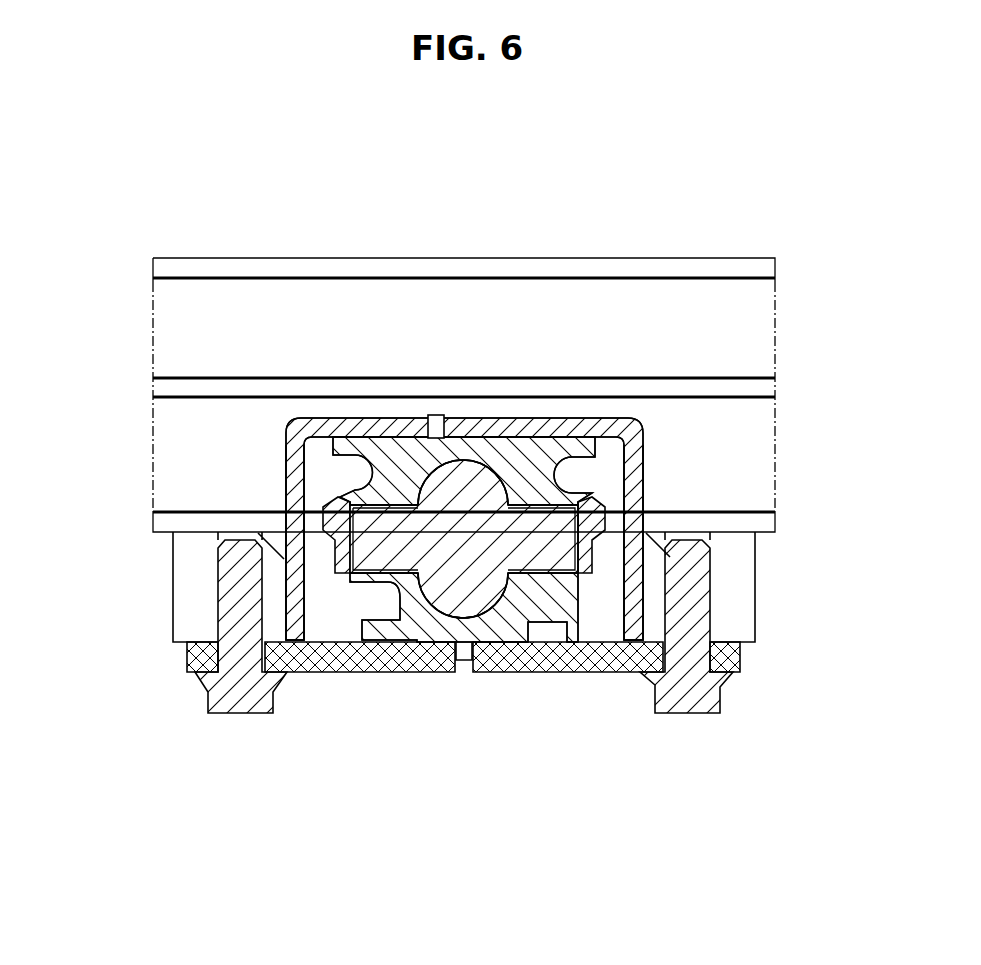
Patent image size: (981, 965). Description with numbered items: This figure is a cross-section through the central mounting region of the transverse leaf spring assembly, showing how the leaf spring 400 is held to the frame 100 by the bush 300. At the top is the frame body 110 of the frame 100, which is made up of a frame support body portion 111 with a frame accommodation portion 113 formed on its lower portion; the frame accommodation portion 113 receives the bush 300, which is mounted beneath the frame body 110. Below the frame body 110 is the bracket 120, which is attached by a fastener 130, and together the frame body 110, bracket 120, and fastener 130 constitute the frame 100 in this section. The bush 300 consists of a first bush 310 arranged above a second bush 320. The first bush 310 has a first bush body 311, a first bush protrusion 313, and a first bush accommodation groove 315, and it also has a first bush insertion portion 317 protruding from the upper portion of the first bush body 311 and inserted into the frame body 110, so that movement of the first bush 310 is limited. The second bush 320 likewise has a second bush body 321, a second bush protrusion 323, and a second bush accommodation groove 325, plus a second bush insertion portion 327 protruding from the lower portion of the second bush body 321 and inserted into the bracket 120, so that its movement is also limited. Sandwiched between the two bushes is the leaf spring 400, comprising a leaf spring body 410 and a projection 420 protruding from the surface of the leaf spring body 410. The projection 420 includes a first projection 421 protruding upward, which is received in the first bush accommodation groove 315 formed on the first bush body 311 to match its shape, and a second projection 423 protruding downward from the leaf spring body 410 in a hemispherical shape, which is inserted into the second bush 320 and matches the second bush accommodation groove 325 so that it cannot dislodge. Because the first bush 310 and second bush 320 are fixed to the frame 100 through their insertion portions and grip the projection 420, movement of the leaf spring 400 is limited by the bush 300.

The frame 100 is at (288, 218).
The frame body 110 is at (128, 385).
The frame support body portion 111 is at (178, 328).
The frame accommodation portion 113 is at (303, 467).
The bracket 120 is at (363, 668).
The fastener 130 is at (242, 707).
The bush 300 is at (655, 843).
The first bush 310 is at (870, 400).
The first bush body 311 is at (545, 473).
The first bush protrusion 313 is at (647, 512).
The first bush accommodation groove 315 is at (508, 483).
The first bush insertion portion 317 is at (447, 428).
The second bush 320 is at (682, 807).
The second bush body 321 is at (485, 580).
The second bush protrusion 323 is at (587, 567).
The second bush accommodation groove 325 is at (497, 600).
The second bush insertion portion 327 is at (458, 665).
The leaf spring 400 is at (120, 697).
The leaf spring body 410 is at (380, 528).
The projection 420 is at (88, 620).
The first projection 421 is at (383, 552).
The second projection 423 is at (193, 672).